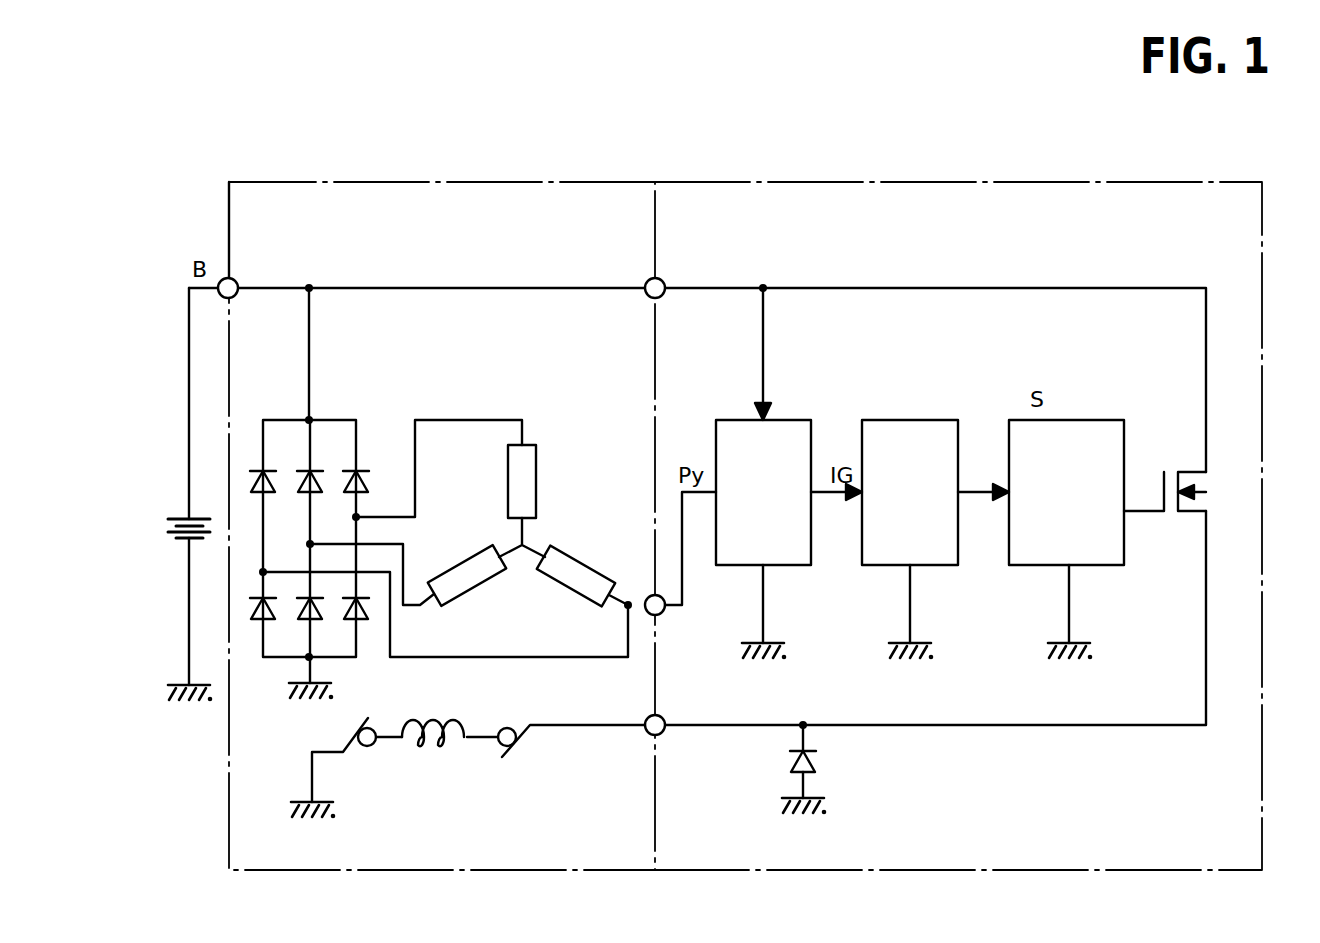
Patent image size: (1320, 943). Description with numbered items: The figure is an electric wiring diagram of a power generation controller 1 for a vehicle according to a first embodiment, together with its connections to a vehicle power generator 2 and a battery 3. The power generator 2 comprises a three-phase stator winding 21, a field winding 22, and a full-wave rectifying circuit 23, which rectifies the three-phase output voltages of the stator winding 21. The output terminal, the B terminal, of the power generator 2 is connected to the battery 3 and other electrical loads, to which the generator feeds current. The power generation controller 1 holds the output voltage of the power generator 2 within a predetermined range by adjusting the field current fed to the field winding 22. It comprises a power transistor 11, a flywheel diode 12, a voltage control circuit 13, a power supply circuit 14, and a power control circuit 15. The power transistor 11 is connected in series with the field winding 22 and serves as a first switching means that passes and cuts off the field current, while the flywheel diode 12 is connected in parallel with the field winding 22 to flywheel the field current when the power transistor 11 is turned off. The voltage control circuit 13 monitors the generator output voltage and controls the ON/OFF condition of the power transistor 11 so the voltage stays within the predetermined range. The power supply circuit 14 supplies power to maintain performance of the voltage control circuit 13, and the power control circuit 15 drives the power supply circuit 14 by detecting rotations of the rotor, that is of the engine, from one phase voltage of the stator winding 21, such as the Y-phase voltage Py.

The power generation controller 1 is at (974, 182).
The power generator 2 is at (478, 182).
The battery 3 is at (180, 517).
The power transistor 11 is at (1168, 515).
The flywheel diode 12 is at (818, 765).
The voltage control circuit 13 is at (1085, 420).
The power supply circuit 14 is at (930, 420).
The power control circuit 15 is at (783, 420).
The three-phase stator winding 21 is at (530, 440).
The field winding 22 is at (443, 750).
The full-wave rectifying circuit 23 is at (340, 406).